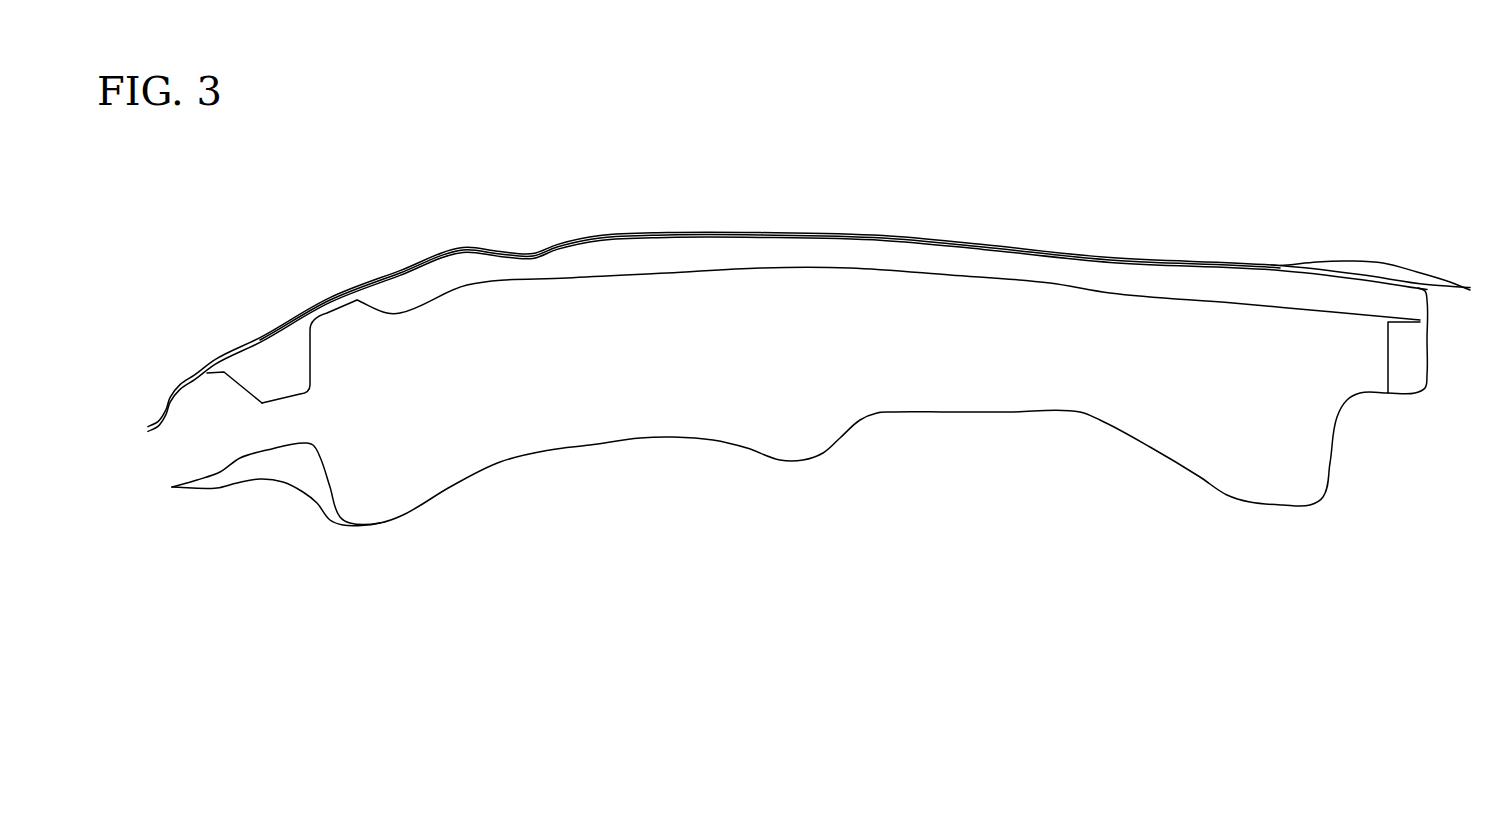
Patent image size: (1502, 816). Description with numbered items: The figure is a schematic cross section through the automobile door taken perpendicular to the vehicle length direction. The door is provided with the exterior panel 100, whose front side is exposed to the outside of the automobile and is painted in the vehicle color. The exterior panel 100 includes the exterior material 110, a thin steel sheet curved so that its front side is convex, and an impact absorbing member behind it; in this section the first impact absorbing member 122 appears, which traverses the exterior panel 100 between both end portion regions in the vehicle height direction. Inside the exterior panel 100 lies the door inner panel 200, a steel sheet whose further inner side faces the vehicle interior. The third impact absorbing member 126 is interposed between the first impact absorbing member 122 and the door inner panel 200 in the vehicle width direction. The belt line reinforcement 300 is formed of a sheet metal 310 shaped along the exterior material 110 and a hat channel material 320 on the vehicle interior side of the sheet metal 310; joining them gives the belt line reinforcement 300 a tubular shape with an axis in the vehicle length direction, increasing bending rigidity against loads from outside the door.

The exterior panel 100 is at (822, 232).
The exterior material 110 is at (1293, 267).
The first impact absorbing member 122 is at (1040, 265).
The third impact absorbing member 126 is at (1407, 376).
The door inner panel 200 is at (928, 414).
The belt line reinforcement 300 is at (308, 372).
The sheet metal 310 is at (253, 340).
The hat channel material 320 is at (303, 394).